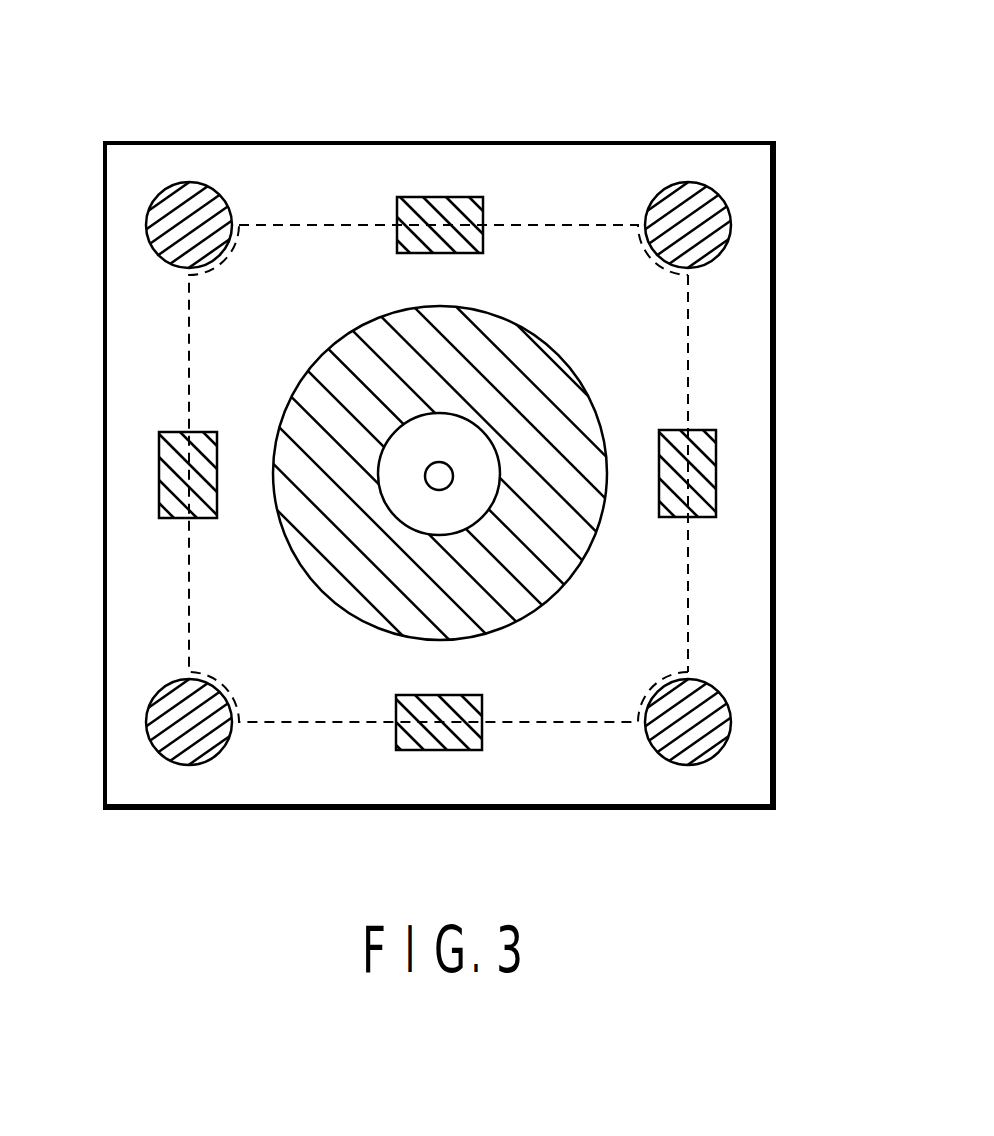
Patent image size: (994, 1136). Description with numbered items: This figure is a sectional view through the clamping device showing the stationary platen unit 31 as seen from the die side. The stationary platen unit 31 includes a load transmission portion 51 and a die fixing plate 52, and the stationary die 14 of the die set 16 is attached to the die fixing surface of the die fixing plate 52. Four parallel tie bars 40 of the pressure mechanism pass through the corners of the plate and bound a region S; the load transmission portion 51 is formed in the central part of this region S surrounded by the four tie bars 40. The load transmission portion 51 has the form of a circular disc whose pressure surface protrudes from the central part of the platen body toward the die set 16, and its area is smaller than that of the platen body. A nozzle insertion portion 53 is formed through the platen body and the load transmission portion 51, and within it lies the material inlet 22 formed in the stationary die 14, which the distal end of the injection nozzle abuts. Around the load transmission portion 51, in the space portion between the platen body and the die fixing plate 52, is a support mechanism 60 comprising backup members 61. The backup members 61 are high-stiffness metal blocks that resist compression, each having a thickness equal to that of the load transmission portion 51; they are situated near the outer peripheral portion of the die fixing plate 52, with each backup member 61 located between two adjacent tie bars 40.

The stationary platen unit 31 is at (703, 120).
The die fixing plate 52 is at (322, 162).
The tie bar 40 is at (158, 222).
The support mechanism 60 is at (468, 190).
The backup member 61 is at (447, 210).
The stationary die 14 is at (655, 579).
The die set 16 is at (694, 646).
The region S is at (636, 358).
The load transmission portion 51 is at (336, 372).
The nozzle insertion portion 53 is at (403, 537).
The material inlet 22 is at (434, 477).